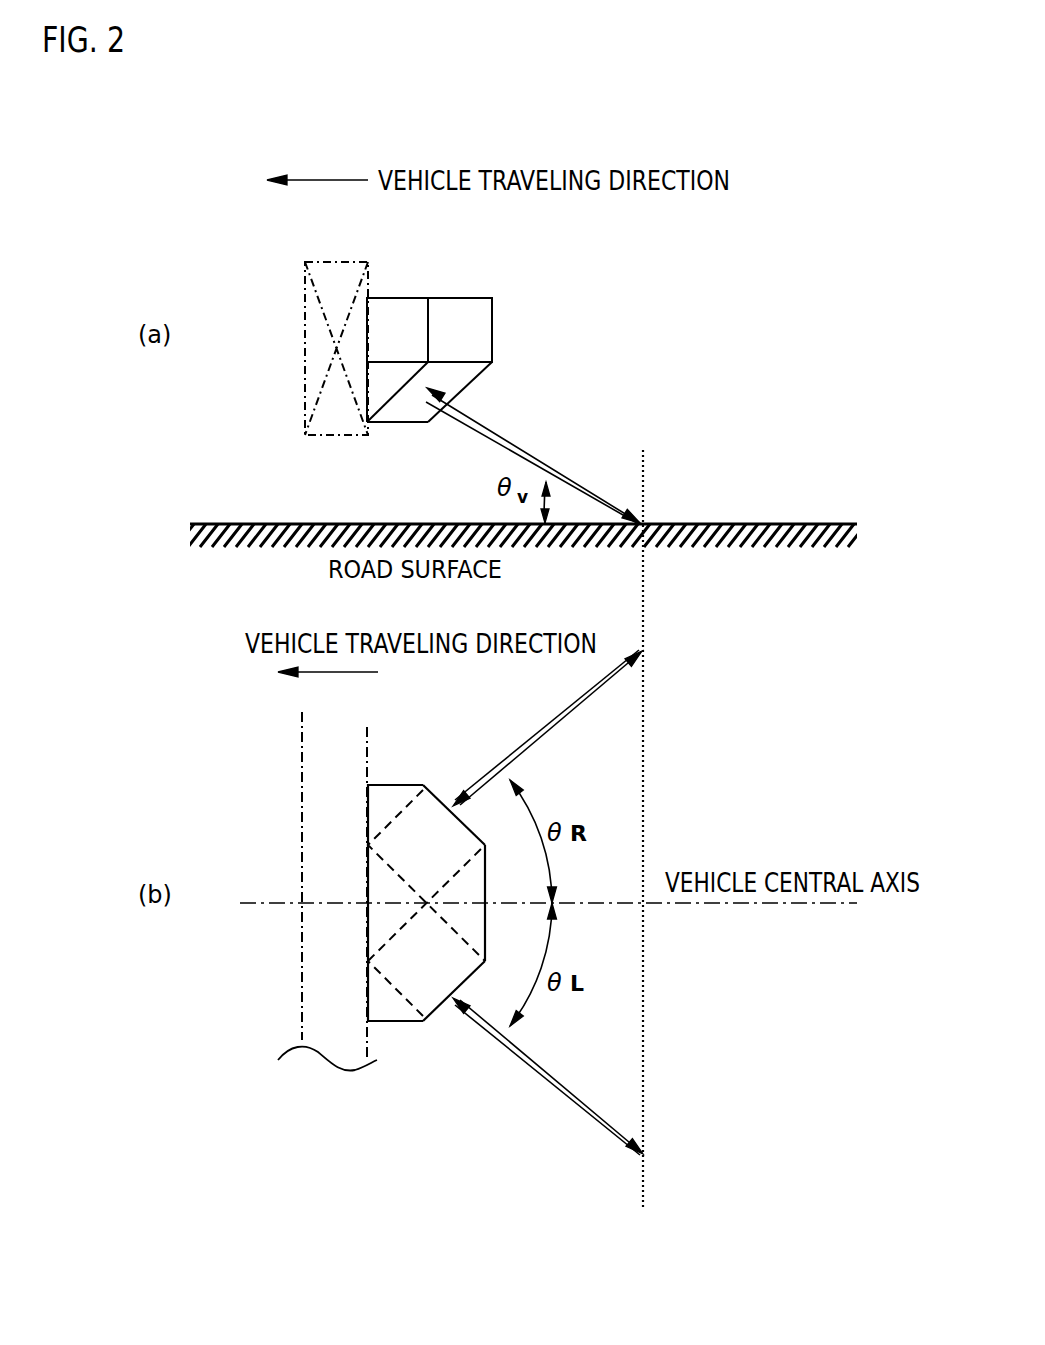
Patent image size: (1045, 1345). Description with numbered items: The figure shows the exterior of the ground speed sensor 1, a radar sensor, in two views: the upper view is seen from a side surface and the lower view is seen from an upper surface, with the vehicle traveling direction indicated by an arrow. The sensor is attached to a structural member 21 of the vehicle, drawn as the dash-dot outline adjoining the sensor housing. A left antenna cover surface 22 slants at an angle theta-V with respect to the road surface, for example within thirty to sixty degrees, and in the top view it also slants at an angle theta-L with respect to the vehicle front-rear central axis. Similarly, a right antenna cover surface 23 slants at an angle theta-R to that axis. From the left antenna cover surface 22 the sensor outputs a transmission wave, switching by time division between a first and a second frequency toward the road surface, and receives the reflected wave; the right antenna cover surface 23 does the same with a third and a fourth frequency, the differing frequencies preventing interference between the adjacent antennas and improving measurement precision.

The ground speed sensor 1 is at (455, 298).
The structural member 21 is at (278, 717).
The left antenna cover surface 22 is at (402, 413).
The right antenna cover surface 23 is at (427, 820).